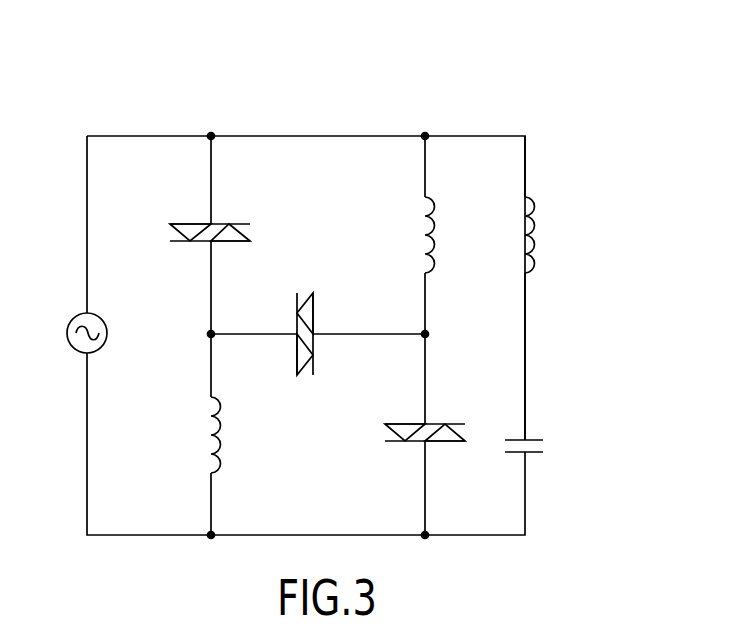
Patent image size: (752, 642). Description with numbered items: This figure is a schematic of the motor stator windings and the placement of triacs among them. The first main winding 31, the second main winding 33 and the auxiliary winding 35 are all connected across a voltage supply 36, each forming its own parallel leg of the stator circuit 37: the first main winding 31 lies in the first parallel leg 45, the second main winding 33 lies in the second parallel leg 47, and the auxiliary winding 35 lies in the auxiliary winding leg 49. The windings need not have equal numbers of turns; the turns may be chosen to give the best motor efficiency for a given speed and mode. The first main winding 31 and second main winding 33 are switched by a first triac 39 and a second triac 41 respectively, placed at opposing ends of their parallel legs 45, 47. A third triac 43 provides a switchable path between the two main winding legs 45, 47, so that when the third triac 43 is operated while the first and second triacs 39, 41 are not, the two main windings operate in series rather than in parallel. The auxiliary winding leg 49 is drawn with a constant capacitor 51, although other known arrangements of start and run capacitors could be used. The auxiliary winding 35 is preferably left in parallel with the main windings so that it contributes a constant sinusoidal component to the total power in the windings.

The first main winding 31 is at (219, 462).
The second main winding 33 is at (433, 207).
The auxiliary winding 35 is at (534, 264).
The voltage supply 36 is at (78, 352).
The stator circuit 37 is at (614, 493).
The first triac 39 is at (250, 240).
The second triac 41 is at (465, 424).
The third triac 43 is at (313, 310).
The first main winding parallel leg 45 is at (212, 118).
The second main winding parallel leg 47 is at (427, 118).
The auxiliary winding leg 49 is at (525, 118).
The constant capacitor 51 is at (533, 438).